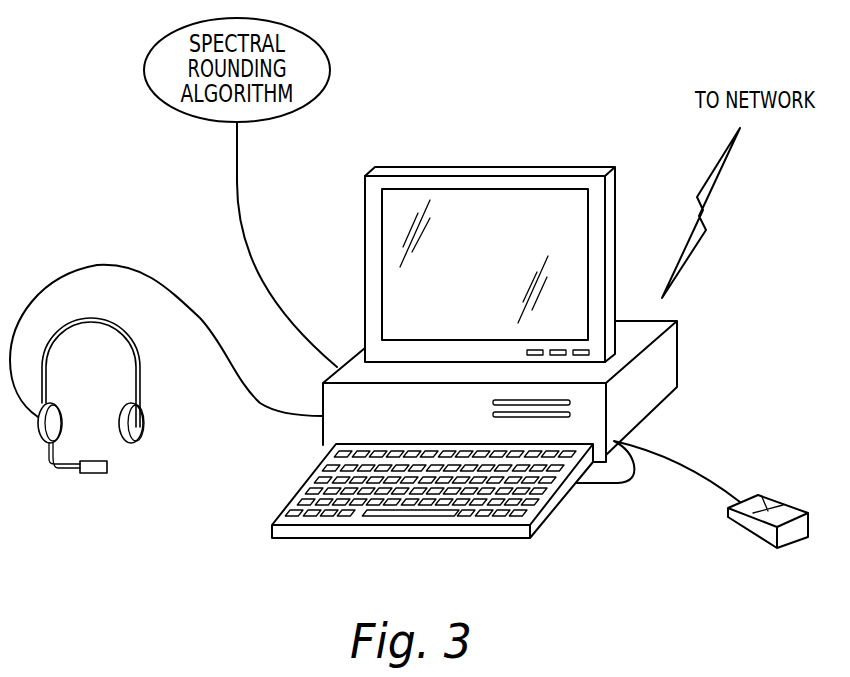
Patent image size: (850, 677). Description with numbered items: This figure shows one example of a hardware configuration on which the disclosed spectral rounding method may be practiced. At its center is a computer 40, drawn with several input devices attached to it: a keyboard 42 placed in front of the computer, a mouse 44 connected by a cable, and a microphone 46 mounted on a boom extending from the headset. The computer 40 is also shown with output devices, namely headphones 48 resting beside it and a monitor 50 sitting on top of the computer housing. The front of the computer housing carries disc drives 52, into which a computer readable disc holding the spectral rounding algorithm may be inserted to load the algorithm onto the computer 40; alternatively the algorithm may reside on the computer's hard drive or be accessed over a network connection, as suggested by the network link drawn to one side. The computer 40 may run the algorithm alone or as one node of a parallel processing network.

The computer 40 is at (658, 365).
The keyboard 42 is at (312, 528).
The mouse 44 is at (760, 533).
The microphone 46 is at (93, 475).
The headphones 48 is at (142, 383).
The monitor 50 is at (488, 203).
The disc drives 52 is at (510, 400).